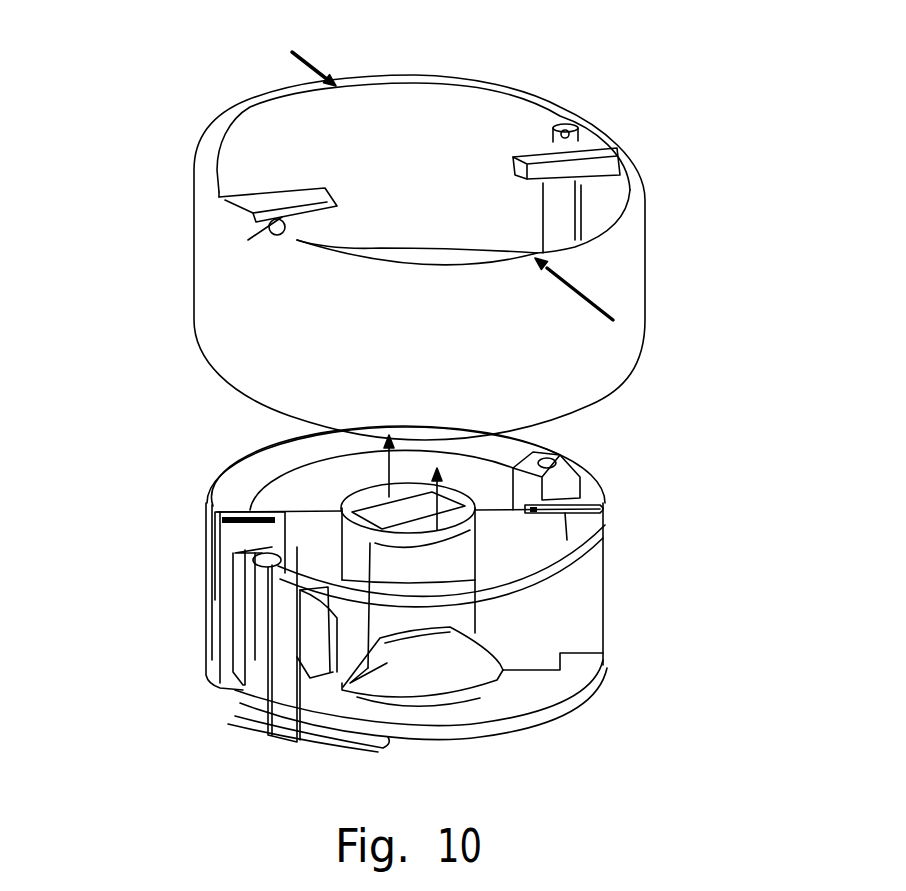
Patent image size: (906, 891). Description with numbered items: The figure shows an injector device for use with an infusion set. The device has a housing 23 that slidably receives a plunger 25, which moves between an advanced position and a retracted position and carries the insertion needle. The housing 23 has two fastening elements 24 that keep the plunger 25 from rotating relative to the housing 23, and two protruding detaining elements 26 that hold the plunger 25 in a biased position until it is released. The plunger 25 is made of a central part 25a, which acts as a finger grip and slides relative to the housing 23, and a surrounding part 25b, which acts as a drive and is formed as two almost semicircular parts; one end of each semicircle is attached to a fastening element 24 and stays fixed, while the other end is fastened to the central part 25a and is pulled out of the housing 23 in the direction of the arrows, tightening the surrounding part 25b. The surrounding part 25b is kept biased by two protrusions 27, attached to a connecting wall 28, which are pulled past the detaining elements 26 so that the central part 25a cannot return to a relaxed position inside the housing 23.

The housing 23 is at (617, 258).
The fastening element 24 is at (270, 225).
The plunger 25 is at (672, 633).
The central part 25a is at (342, 540).
The surrounding part 25b is at (580, 538).
The detaining element 26 is at (240, 198).
The protrusion 27 is at (313, 632).
The connecting wall 28 is at (567, 608).